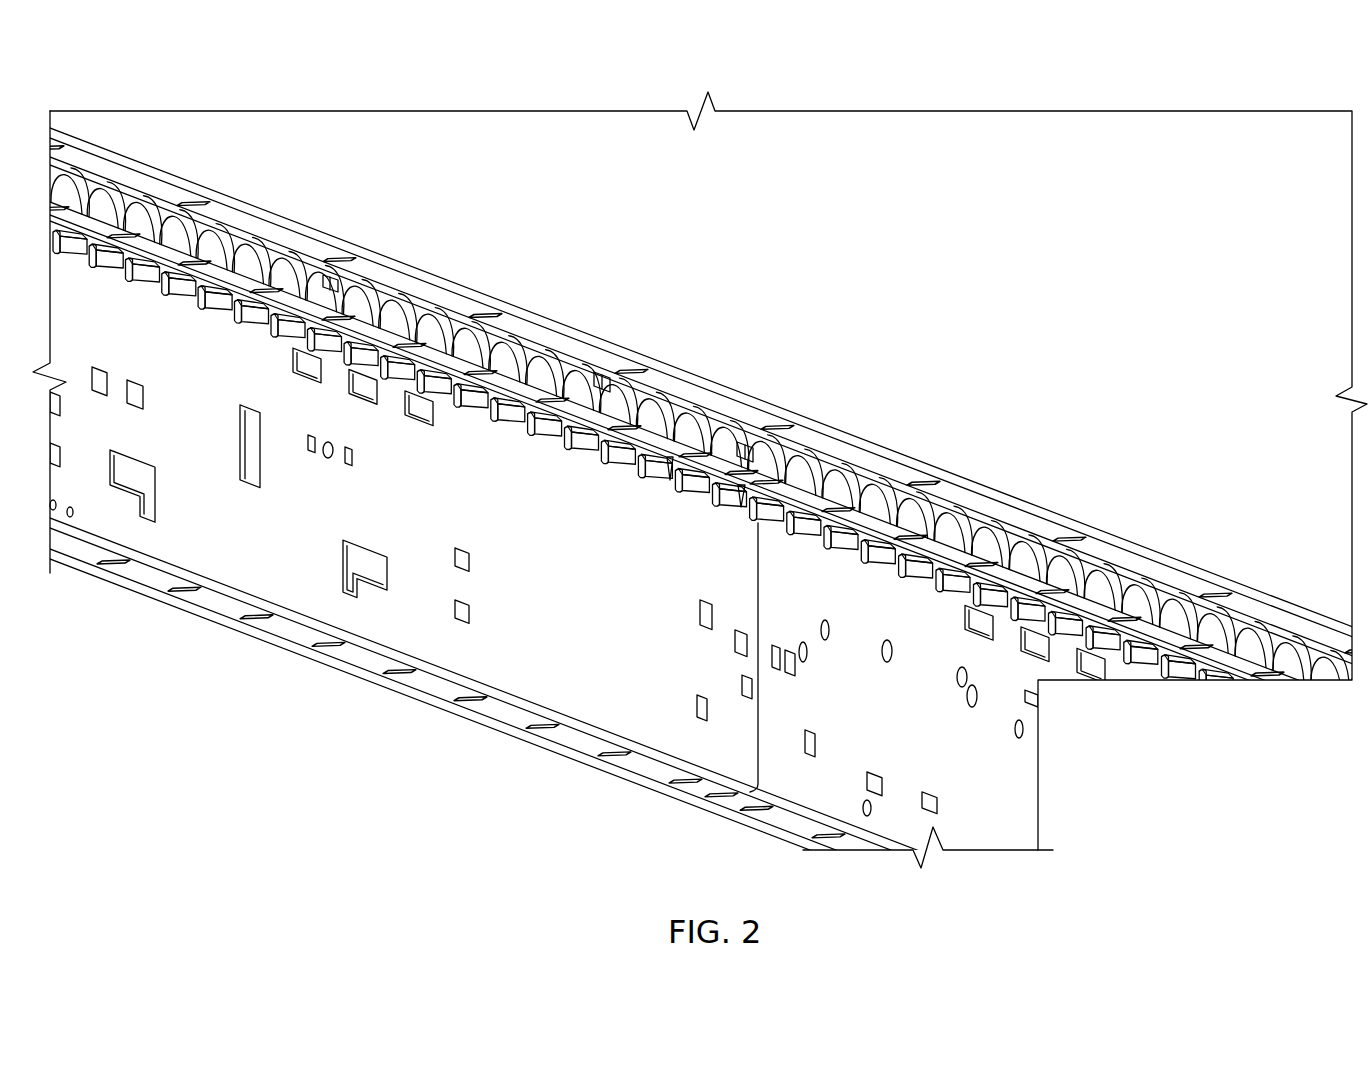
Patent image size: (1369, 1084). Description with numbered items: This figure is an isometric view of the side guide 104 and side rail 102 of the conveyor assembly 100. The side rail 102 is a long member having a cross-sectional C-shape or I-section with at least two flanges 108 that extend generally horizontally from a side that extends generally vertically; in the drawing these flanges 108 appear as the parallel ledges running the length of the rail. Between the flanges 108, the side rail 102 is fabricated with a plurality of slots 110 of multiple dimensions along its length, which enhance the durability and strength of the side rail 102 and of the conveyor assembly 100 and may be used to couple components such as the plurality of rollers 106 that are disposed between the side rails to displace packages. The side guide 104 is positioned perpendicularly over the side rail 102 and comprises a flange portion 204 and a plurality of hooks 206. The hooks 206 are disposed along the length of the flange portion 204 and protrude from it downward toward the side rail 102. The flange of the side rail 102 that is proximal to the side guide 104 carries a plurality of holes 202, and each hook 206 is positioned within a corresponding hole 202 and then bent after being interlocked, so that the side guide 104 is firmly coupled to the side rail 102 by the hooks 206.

The conveyor assembly 100 is at (1258, 88).
The side rail 102 is at (570, 695).
The side guide 104 is at (565, 130).
The rollers 106 is at (245, 240).
The flanges 108 is at (383, 335).
The slots 110 is at (328, 462).
The holes 202 is at (663, 407).
The flange portion 204 is at (507, 318).
The hooks 206 is at (597, 368).